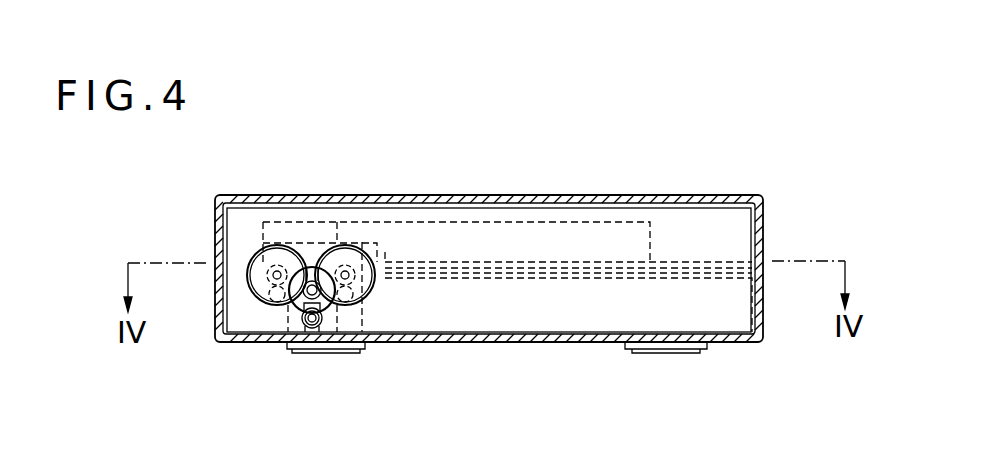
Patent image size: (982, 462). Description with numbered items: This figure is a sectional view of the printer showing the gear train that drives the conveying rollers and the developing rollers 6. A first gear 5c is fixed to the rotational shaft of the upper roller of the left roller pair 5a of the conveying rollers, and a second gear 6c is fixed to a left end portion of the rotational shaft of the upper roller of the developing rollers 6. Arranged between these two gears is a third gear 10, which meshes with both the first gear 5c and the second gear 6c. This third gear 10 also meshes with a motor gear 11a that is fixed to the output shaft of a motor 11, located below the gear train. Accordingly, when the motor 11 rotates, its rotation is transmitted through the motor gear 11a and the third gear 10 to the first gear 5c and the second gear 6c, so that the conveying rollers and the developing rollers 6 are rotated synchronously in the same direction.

The left roller pair 5a is at (345, 235).
The first gear 5c is at (352, 247).
The developing rollers 6 is at (258, 255).
The second gear 6c is at (282, 247).
The third gear 10 is at (297, 308).
The motor 11 is at (305, 340).
The motor gear 11a is at (316, 330).